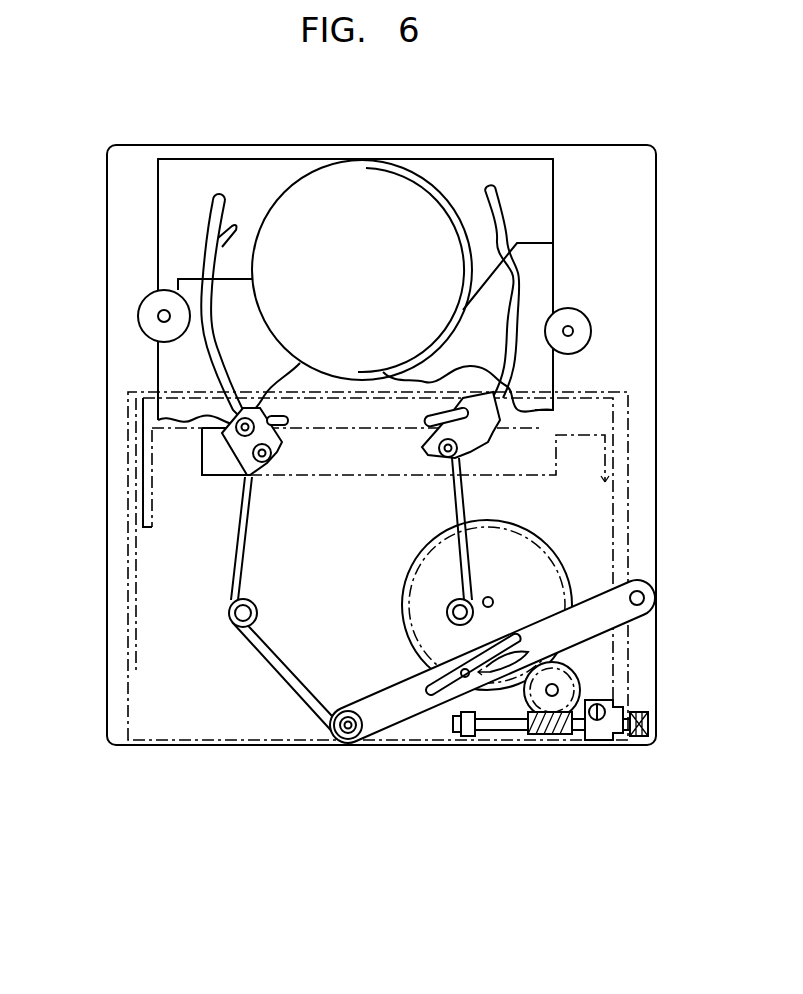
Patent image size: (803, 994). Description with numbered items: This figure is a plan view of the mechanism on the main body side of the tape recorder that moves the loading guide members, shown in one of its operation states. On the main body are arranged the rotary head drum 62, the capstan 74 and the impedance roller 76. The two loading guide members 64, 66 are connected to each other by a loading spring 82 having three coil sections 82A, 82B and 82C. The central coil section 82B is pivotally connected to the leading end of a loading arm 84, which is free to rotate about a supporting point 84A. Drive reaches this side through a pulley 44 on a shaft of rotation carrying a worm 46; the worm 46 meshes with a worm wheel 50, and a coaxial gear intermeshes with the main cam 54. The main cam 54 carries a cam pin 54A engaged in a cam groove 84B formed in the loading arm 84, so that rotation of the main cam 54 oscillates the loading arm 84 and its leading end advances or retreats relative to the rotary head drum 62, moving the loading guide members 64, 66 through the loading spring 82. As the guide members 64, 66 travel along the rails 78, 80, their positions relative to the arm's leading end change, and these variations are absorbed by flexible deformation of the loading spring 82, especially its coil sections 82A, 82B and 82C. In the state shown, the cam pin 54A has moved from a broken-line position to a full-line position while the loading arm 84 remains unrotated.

The pulley 44 is at (645, 730).
The worm 46 is at (545, 722).
The worm wheel 50 is at (585, 690).
The main cam 54 is at (548, 572).
The cam pin 54A is at (462, 680).
The rotary head drum 62 is at (362, 182).
The loading guide member 64 is at (272, 440).
The loading guide member 66 is at (472, 435).
The capstan 74 is at (573, 331).
The impedance roller 76 is at (145, 322).
The rail 78 is at (212, 253).
The rail 80 is at (515, 258).
The loading spring 82 is at (237, 567).
The coil section 82A is at (257, 607).
The coil section 82B is at (343, 710).
The coil section 82C is at (450, 605).
The loading arm 84 is at (397, 717).
The supporting point 84A is at (652, 600).
The cam groove 84B is at (505, 630).